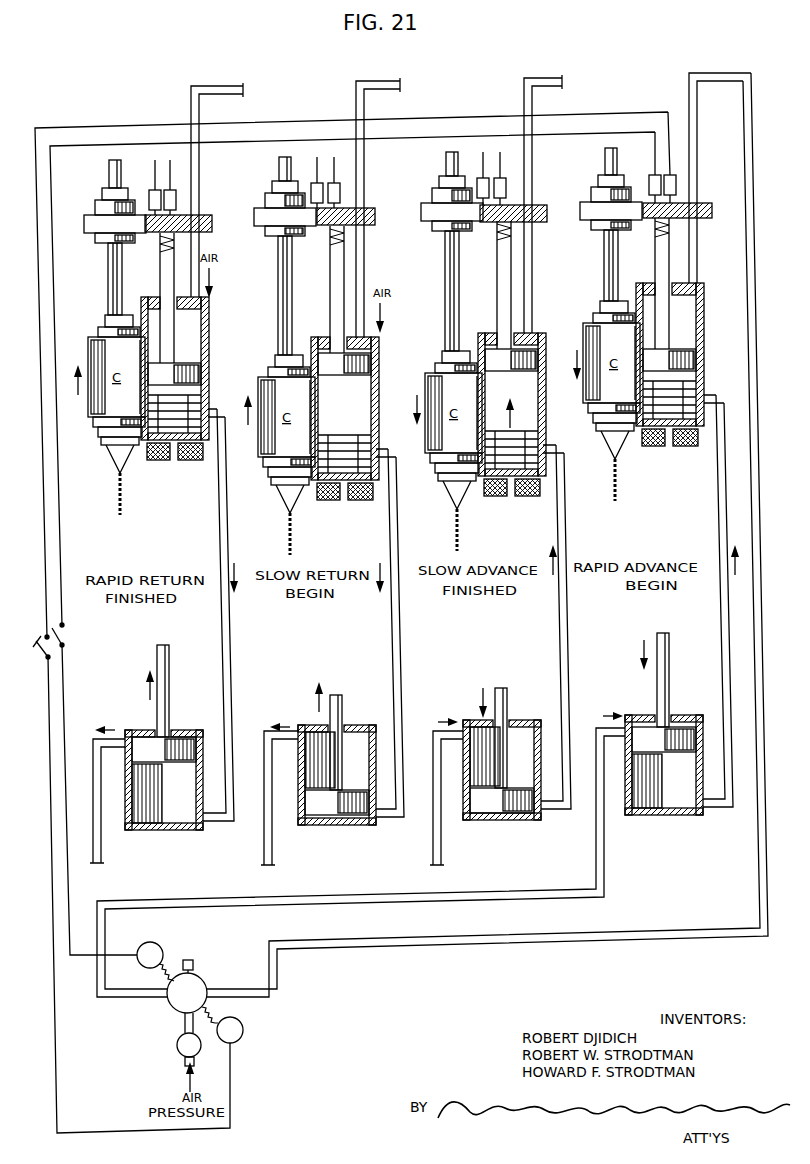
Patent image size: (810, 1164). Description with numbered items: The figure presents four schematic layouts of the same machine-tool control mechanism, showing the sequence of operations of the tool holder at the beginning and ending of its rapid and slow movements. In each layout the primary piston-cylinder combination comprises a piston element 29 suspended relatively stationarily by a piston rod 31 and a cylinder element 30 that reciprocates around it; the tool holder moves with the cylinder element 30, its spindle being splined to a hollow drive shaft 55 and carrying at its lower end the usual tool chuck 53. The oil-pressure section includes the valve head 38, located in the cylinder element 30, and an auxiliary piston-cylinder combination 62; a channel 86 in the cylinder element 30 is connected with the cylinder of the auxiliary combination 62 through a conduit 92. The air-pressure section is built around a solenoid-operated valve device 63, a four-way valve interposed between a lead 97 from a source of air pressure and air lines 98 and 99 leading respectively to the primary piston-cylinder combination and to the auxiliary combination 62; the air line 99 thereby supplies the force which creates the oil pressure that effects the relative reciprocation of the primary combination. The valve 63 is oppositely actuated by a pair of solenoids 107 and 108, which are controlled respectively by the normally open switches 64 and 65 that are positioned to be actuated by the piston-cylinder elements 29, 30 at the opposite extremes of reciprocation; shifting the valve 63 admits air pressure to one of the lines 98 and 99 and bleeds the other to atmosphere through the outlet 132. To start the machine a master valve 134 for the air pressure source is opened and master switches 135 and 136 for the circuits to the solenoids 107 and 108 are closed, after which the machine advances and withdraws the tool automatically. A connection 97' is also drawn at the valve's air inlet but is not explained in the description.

The lead 97 is at (471, 196).
The switch 65 is at (158, 188).
The switch 64 is at (173, 196).
The hollow drive shaft 55 is at (107, 300).
The piston rod 31 is at (177, 325).
The cylinder element 30 is at (210, 332).
The piston element 29 is at (207, 352).
The channel 86 is at (212, 408).
The tool chuck 53 is at (115, 453).
The valve head 38 is at (177, 460).
The conduit 92 is at (229, 630).
The auxiliary piston-cylinder combination 62 is at (425, 744).
The air line 99 is at (100, 856).
The air line 98 is at (303, 948).
The solenoid 108 is at (163, 946).
The outlet 132 is at (195, 963).
The solenoid 107 is at (243, 1030).
The solenoid-operated valve device 63 is at (177, 1010).
The master valve 134 is at (183, 1056).
The air inlet connection 97' is at (225, 1074).
The master switch 135 is at (336, 622).
The master switch 136 is at (68, 633).